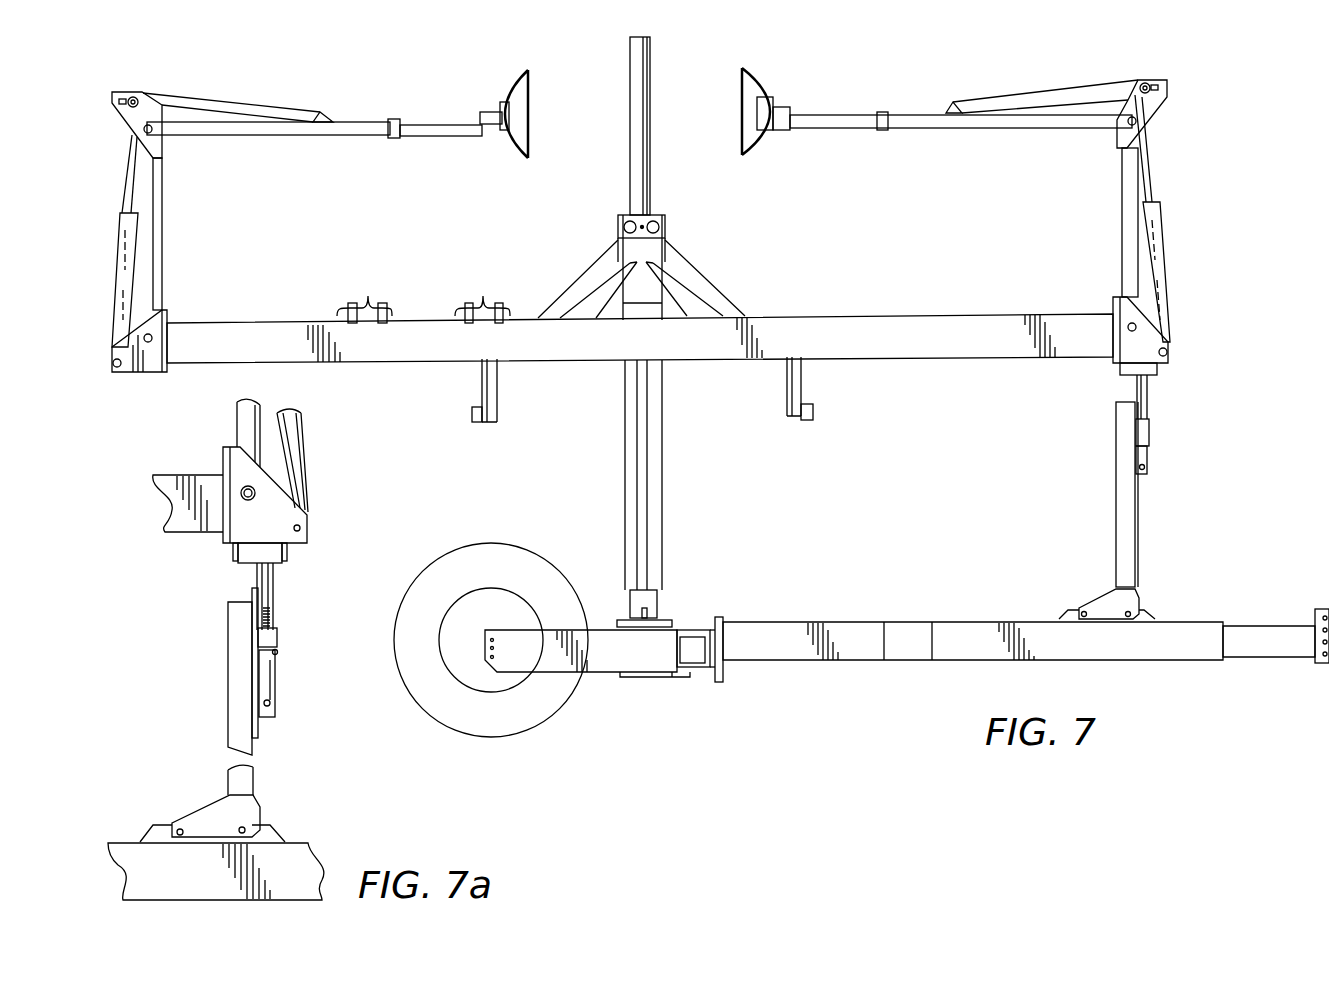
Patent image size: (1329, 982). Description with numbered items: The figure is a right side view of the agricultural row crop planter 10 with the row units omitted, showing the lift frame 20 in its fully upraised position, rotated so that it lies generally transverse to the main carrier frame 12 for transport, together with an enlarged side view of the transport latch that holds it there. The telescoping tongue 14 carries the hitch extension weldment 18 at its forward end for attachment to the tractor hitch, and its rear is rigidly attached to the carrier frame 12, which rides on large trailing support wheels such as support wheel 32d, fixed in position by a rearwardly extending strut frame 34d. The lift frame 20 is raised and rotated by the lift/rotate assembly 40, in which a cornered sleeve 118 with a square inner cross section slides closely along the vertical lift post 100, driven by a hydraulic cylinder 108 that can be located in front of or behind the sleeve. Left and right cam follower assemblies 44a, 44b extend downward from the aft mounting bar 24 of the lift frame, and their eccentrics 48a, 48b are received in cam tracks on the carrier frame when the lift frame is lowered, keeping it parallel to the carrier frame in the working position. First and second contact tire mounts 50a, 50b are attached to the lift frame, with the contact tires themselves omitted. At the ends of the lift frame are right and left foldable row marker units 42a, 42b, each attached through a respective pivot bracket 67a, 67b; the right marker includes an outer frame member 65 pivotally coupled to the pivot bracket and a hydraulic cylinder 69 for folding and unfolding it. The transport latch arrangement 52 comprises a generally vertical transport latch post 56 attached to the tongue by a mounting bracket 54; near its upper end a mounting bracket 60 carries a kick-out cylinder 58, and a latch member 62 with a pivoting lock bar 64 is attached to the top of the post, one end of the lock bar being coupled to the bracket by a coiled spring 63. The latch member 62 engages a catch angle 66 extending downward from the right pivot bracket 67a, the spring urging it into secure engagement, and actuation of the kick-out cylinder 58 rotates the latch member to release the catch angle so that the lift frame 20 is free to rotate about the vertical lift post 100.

In FIG. 7, the agricultural row crop planter 10 is at (463, 517).
In FIG. 7, the main carrier frame 12 is at (698, 640).
In FIG. 7, the telescoping tongue 14 is at (789, 612).
In FIG. 7a, the telescoping tongue 14 is at (297, 833).
In FIG. 7, the hitch extension weldment 18 is at (1321, 609).
In FIG. 7, the lift frame 20 is at (775, 312).
In FIG. 7, the aft mounting bar 24 is at (695, 352).
In FIG. 7a, the aft mounting bar 24 is at (188, 528).
In FIG. 7, the support wheel 32d is at (510, 555).
In FIG. 7, the strut frame 34d is at (597, 667).
In FIG. 7, the lift/rotate assembly 40 is at (608, 468).
In FIG. 7, the right foldable row marker unit 42a is at (1210, 150).
In FIG. 7, the left foldable row marker unit 42b is at (280, 102).
In FIG. 7, the left cam follower assembly 44a is at (798, 377).
In FIG. 7, the right cam follower assembly 44b is at (492, 377).
In FIG. 7, the eccentric 48a is at (803, 415).
In FIG. 7, the eccentric 48b is at (475, 422).
In FIG. 7, the first contact tire mount 50a is at (485, 293).
In FIG. 7, the second contact tire mount 50b is at (366, 293).
In FIG. 7, the transport latch arrangement 52 is at (1186, 446).
In FIG. 7a, the transport latch arrangement 52 is at (305, 680).
In FIG. 7, the mounting bracket 54 is at (1098, 601).
In FIG. 7a, the mounting bracket 54 is at (213, 812).
In FIG. 7, the transport latch post 56 is at (1123, 533).
In FIG. 7a, the transport latch post 56 is at (238, 740).
In FIG. 7, the kick-out cylinder 58 is at (1149, 460).
In FIG. 7a, the kick-out cylinder 58 is at (275, 665).
In FIG. 7a, the mounting bracket 60 is at (277, 650).
In FIG. 7a, the latch member 62 is at (260, 617).
In FIG. 7a, the coiled spring 63 is at (272, 617).
In FIG. 7a, the pivoting lock bar 64 is at (272, 585).
In FIG. 7, the outer frame member 65 is at (1127, 183).
In FIG. 7a, the outer frame member 65 is at (237, 420).
In FIG. 7a, the catch angle 66 is at (235, 557).
In FIG. 7, the right pivot bracket 67a is at (1122, 307).
In FIG. 7a, the right pivot bracket 67a is at (238, 467).
In FIG. 7, the left pivot bracket 67b is at (157, 320).
In FIG. 7, the hydraulic cylinder 69 is at (1162, 268).
In FIG. 7a, the hydraulic cylinder 69 is at (300, 448).
In FIG. 7, the vertical lift post 100 is at (655, 495).
In FIG. 7, the hydraulic cylinder 108 is at (650, 88).
In FIG. 7, the sleeve 118 is at (655, 247).